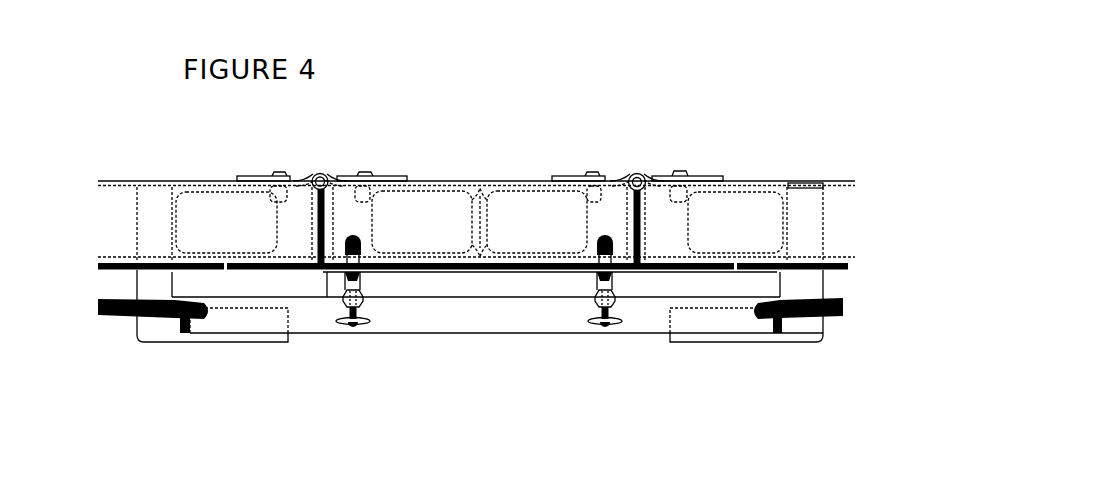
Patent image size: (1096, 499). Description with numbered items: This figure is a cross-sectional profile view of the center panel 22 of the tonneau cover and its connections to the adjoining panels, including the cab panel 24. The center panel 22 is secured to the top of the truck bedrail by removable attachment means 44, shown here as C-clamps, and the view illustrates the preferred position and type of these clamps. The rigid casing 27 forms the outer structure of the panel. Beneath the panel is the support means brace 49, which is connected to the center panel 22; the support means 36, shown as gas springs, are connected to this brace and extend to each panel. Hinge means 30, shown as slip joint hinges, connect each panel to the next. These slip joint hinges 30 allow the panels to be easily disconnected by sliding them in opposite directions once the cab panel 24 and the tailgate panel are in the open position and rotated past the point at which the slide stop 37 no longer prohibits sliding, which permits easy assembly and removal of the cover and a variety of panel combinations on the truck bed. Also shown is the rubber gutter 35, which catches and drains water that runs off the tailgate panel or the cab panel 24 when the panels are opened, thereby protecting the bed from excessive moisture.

The center panel 22 is at (546, 180).
The cab panel 24 is at (800, 181).
The rigid casing 27 is at (479, 181).
The hinge means 30 is at (637, 173).
The rubber gutter 35 is at (690, 270).
The support means 36 is at (150, 318).
The slide stop 37 is at (805, 343).
The removable attachment means 44 is at (593, 318).
The support means brace 49 is at (632, 272).